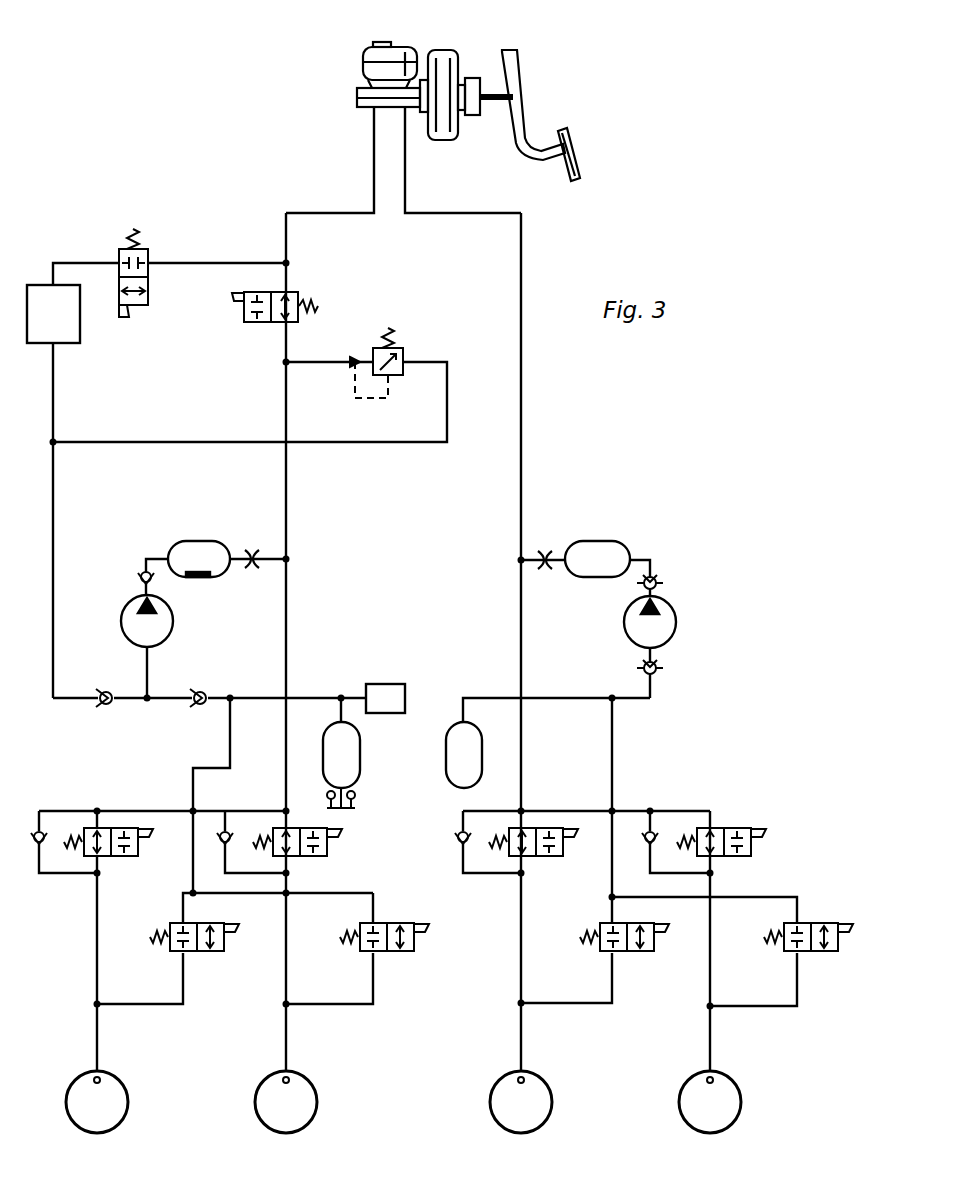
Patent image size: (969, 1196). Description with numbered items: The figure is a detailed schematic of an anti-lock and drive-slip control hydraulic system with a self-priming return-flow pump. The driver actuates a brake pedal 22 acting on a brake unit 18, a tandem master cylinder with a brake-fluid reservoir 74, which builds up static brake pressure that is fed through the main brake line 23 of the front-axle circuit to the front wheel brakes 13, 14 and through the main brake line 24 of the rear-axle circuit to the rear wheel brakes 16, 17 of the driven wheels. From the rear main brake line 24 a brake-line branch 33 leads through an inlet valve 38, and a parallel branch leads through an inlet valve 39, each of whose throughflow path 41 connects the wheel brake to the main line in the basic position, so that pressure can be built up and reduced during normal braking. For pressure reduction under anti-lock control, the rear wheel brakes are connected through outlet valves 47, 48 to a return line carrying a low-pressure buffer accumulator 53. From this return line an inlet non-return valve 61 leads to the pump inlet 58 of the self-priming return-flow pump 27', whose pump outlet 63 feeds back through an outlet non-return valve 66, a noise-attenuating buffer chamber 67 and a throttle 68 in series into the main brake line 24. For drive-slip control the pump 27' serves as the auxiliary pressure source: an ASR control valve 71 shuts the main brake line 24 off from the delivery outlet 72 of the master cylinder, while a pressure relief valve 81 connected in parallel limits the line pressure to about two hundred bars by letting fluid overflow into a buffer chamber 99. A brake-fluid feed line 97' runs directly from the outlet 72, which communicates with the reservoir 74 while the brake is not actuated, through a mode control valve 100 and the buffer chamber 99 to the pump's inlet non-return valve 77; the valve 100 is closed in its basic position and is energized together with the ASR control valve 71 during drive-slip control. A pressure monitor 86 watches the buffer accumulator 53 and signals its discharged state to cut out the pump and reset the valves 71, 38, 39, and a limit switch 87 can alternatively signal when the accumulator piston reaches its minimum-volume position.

The brake-fluid reservoir 74 is at (366, 56).
The delivery outlet 72 is at (372, 108).
The brake unit 18 is at (409, 112).
The brake pedal 22 is at (522, 152).
The mode control valve 100 is at (150, 256).
The brake-fluid feed line 97' is at (219, 238).
The buffer chamber 99 is at (66, 325).
The ASR control valve 71 is at (303, 291).
The pressure relief valve 81 is at (405, 348).
The main brake line 24 is at (288, 521).
The main brake line 23 is at (521, 457).
The buffer chamber 67 is at (212, 571).
The throttle 68 is at (251, 549).
The outlet non-return valve 66 is at (143, 571).
The return-flow pump 27' is at (170, 638).
The pump outlet 63 is at (160, 595).
The pump inlet 58 is at (142, 707).
The inlet non-return valve 77 is at (104, 690).
The inlet non-return valve 61 is at (206, 692).
The pressure monitor 86 is at (393, 683).
The buffer accumulator 53 is at (355, 767).
The limit switch 87 is at (357, 804).
The brake-line branch 33 is at (100, 817).
The throughflow path 41 is at (84, 838).
The inlet valve 38 is at (117, 857).
The inlet valve 39 is at (318, 857).
The outlet valve 47 is at (203, 955).
The outlet valve 48 is at (406, 955).
The wheel brake 16 is at (112, 1119).
The wheel brake 17 is at (301, 1119).
The wheel brake 13 is at (536, 1119).
The wheel brake 14 is at (725, 1119).